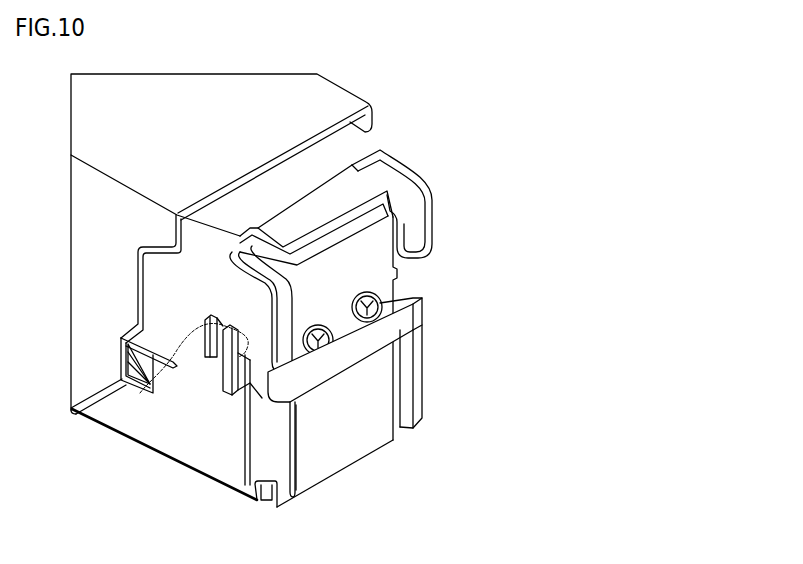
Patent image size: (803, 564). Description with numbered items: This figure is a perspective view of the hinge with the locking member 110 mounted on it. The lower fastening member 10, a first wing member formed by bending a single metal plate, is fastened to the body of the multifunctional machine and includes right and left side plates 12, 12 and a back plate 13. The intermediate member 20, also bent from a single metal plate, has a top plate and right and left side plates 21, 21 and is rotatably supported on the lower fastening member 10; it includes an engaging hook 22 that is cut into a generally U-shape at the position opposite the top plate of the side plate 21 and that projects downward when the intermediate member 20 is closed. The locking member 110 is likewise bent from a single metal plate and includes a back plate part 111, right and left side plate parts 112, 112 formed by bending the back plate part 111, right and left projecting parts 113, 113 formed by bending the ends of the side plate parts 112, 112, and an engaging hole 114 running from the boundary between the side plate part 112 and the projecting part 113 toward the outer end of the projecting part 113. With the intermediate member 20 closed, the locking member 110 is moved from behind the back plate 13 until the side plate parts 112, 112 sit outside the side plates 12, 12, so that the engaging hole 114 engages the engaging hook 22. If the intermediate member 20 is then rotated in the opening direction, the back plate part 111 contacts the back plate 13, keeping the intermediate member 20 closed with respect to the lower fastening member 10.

The lower fastening member 10 is at (288, 354).
The side plate 12 is at (172, 454).
The back plate 13 is at (366, 455).
The intermediate member 20 is at (423, 147).
The side plate 21 is at (426, 177).
The engaging hook 22 is at (237, 358).
The locking member 110 is at (435, 305).
The back plate part 111 is at (308, 390).
The side plate part 112 is at (296, 405).
The projecting part 113 is at (222, 357).
The engaging hole 114 is at (132, 338).